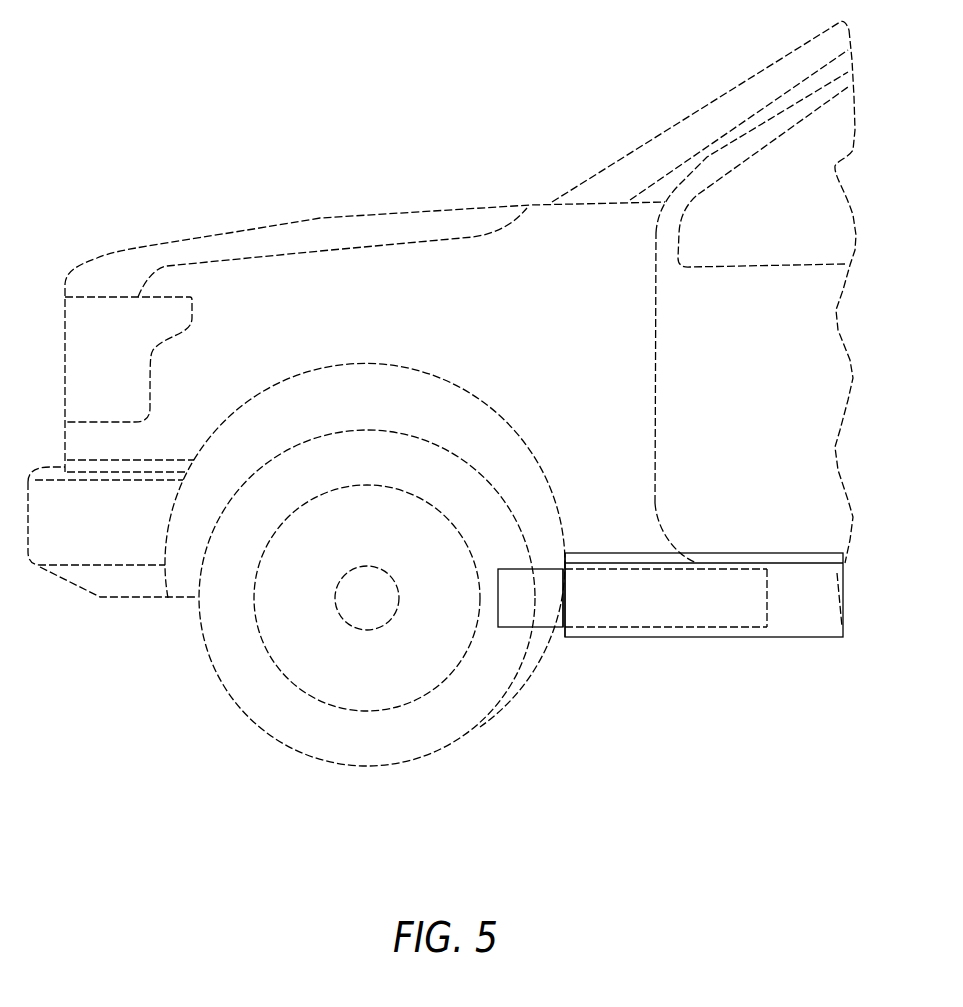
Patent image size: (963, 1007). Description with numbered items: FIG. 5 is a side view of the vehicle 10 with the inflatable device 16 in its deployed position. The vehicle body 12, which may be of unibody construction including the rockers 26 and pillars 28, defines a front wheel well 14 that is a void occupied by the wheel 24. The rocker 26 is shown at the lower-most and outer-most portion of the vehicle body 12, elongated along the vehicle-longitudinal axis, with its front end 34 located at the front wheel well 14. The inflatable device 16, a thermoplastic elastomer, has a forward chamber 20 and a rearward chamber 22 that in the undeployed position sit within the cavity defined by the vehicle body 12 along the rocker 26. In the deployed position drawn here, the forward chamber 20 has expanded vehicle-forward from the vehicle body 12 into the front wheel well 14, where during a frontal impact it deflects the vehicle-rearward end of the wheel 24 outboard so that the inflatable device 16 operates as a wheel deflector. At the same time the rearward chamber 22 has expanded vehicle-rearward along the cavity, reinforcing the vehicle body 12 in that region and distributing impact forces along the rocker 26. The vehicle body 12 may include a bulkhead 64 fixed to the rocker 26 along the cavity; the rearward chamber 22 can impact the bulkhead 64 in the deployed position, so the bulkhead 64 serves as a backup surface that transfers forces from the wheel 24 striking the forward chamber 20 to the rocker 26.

The vehicle 10 is at (401, 163).
The vehicle body 12 is at (811, 655).
The front wheel well 14 is at (552, 665).
The inflatable device 16 is at (543, 633).
The forward chamber 20 is at (548, 592).
The rearward chamber 22 is at (666, 630).
The wheel 24 is at (278, 718).
The rocker 26 is at (740, 638).
The pillar 28 is at (656, 437).
The front end of the rocker 34 is at (566, 643).
The bulkhead 64 is at (772, 597).